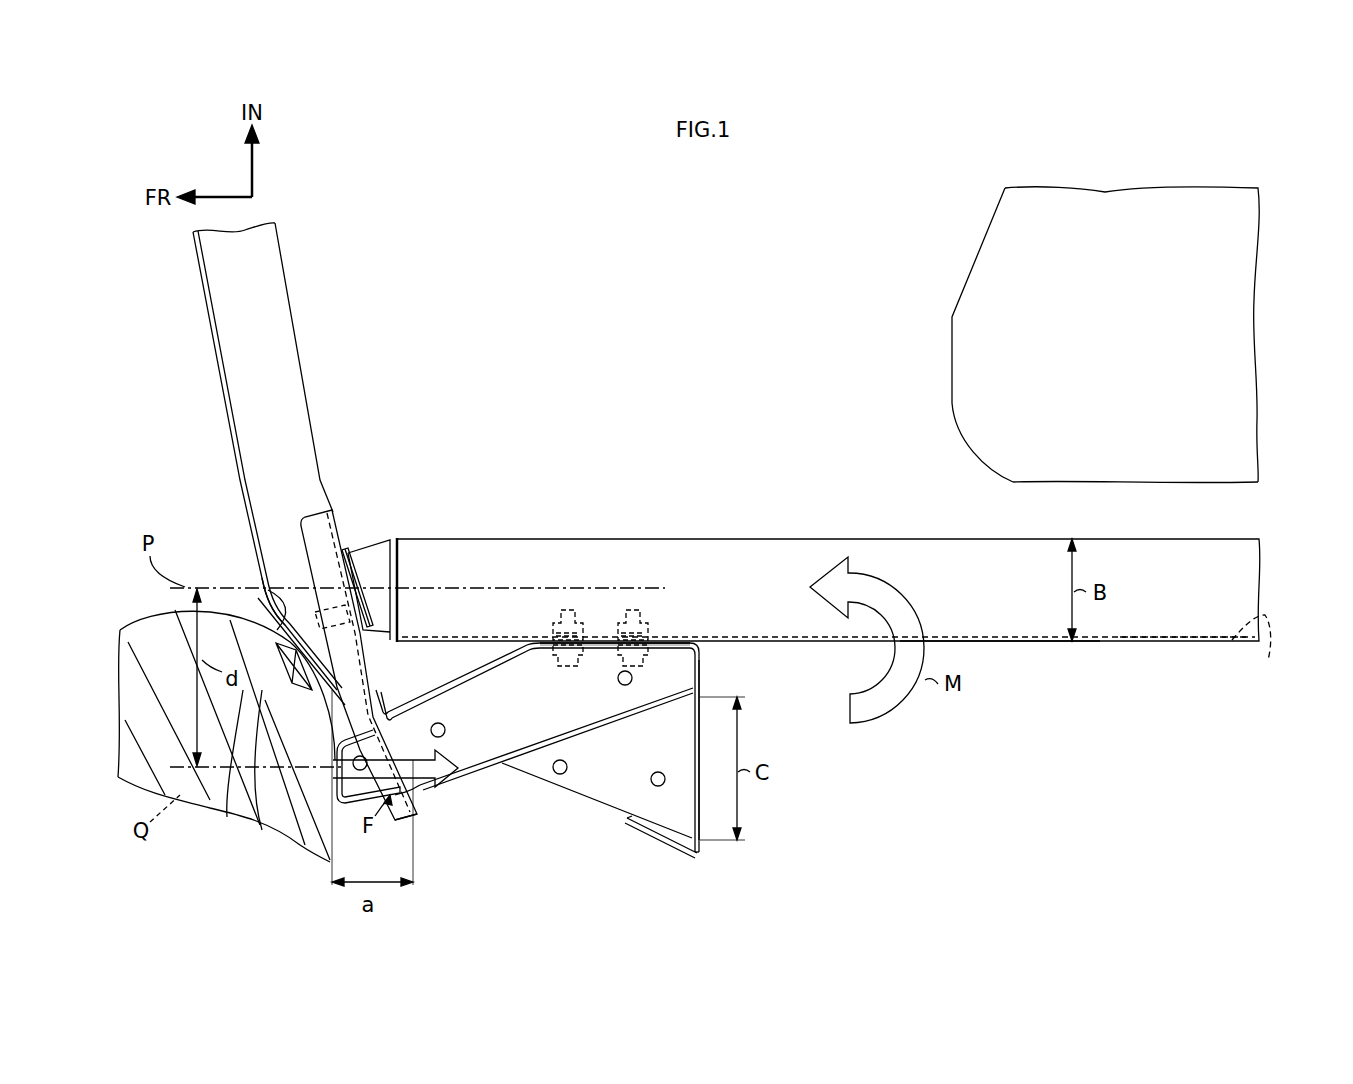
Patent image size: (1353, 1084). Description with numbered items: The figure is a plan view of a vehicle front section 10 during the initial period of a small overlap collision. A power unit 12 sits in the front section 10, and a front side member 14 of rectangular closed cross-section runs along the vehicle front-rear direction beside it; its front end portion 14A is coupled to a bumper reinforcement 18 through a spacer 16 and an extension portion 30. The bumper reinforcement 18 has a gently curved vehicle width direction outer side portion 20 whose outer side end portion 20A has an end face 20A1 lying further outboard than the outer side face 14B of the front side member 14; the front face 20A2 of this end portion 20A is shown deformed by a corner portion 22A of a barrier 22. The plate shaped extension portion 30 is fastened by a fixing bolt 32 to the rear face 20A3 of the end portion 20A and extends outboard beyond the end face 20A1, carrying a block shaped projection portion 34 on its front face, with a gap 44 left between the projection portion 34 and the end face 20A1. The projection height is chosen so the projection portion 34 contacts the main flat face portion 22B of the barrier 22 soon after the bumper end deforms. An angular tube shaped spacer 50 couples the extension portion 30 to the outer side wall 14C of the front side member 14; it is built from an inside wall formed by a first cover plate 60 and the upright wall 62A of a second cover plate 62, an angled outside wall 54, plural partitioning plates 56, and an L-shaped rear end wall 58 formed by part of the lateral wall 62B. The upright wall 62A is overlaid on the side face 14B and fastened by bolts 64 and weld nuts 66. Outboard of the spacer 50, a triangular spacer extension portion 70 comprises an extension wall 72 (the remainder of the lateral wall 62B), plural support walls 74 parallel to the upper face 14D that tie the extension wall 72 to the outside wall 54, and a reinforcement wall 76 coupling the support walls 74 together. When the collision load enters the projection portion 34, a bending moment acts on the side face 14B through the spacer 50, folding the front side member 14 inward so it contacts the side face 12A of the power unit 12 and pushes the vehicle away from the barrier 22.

The vehicle front section 10 is at (160, 403).
The power unit 12 is at (951, 332).
The side face of the power unit 12A is at (1158, 482).
The front side member 14 is at (1115, 643).
The front end portion of the front side member 14A is at (415, 562).
The vehicle width direction outer side face of the front side member 14B is at (1032, 644).
The side wall on the vehicle width direction outer side of the front side member 14C is at (1265, 651).
The upper face of the front side member 14D is at (1163, 622).
The spacer 16 is at (350, 528).
The bumper reinforcement 18 is at (207, 337).
The vehicle width direction outer side portion of the bumper reinforcement 20 is at (255, 486).
The vehicle width direction outer side end portion of the bumper reinforcement 20A is at (272, 775).
The end face of the outer side end portion 20A1 is at (292, 800).
The front face of the outer side end portion 20A2 is at (235, 760).
The rear face of the outer side end portion 20A3 is at (375, 650).
The barrier 22 is at (125, 623).
The corner portion of the barrier 22A is at (283, 602).
The main flat face portion of the barrier 22B is at (380, 850).
The extension portion 30 is at (338, 512).
The fixing bolt 32 is at (365, 548).
The projection portion 34 is at (383, 800).
The gap 44 is at (332, 790).
The spacer 50 is at (596, 702).
The outside wall 54 is at (528, 760).
The partitioning plates 56 is at (475, 752).
The rear end wall 58 is at (700, 670).
The first cover plate 60 is at (498, 655).
The second cover plate 62 is at (700, 848).
The upright wall of the second cover plate 62A is at (665, 647).
The lateral wall of the second cover plate 62B is at (690, 820).
The bolts 64 is at (632, 668).
The weld nuts 66 is at (620, 632).
The spacer extension portion 70 is at (610, 825).
The extension wall 72 is at (700, 750).
The support walls 74 is at (598, 795).
The reinforcement wall 76 is at (683, 858).